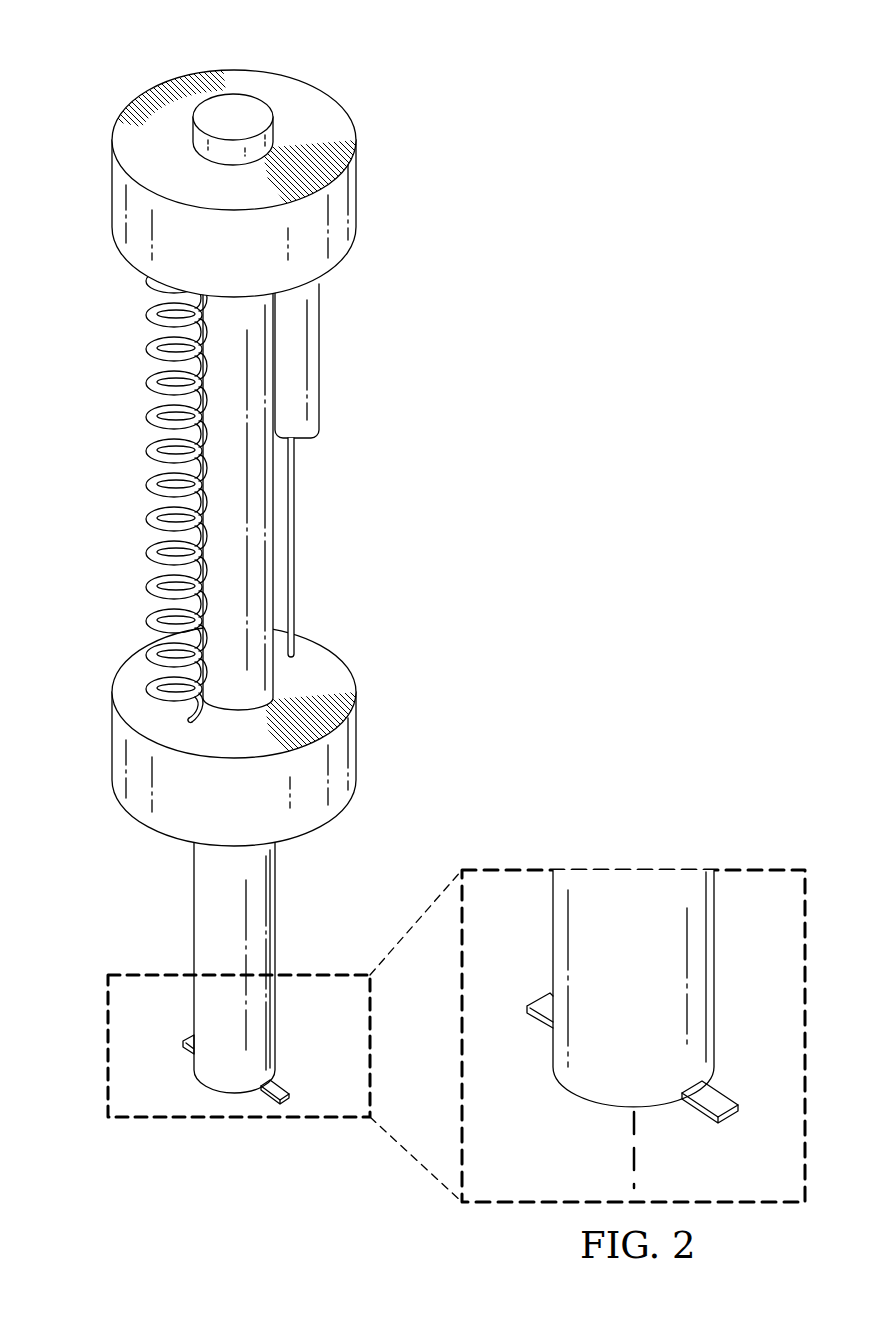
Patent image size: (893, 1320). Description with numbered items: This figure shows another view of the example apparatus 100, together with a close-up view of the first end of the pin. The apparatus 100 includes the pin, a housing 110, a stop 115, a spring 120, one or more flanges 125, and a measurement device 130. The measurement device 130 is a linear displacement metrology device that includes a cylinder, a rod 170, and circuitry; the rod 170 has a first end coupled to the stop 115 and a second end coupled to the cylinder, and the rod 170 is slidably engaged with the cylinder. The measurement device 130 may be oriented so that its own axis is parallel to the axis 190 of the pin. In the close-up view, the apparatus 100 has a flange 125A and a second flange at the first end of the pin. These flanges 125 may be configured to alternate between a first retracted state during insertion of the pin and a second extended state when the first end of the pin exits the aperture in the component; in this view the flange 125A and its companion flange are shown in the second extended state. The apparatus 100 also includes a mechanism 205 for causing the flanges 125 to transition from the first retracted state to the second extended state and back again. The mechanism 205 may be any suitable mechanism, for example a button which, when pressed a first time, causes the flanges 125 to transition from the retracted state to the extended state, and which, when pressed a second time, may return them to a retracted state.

The apparatus 100 is at (570, 84).
The housing 110 is at (104, 181).
The stop 115 is at (112, 733).
The spring 120 is at (148, 415).
The flanges 125 is at (289, 1090).
The flange 125A is at (735, 1096).
The measurement device 130 is at (323, 347).
The rod 170 is at (296, 548).
The axis of pin 190 is at (632, 1148).
The mechanism 205 is at (232, 100).